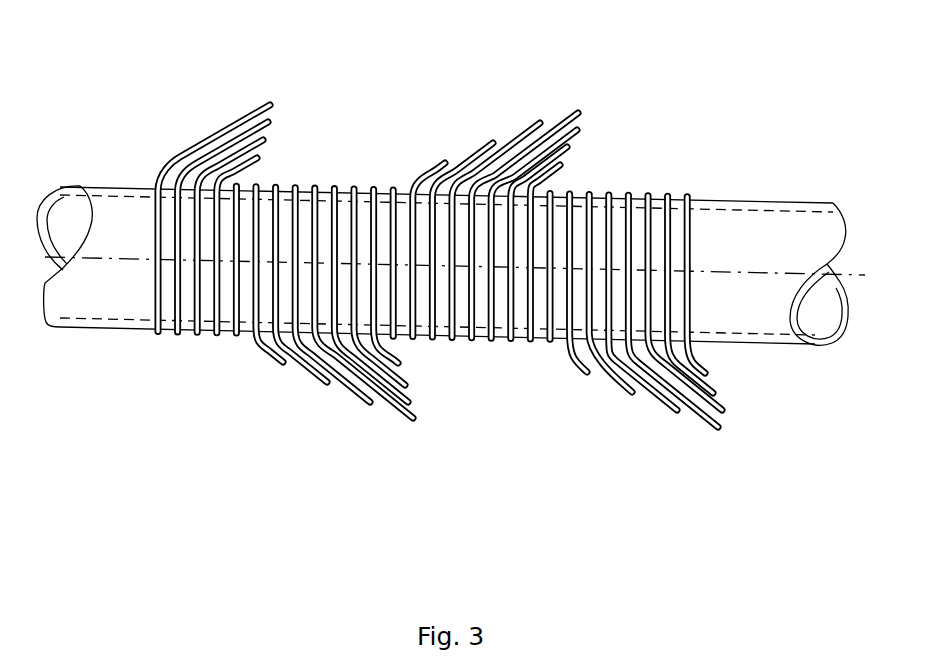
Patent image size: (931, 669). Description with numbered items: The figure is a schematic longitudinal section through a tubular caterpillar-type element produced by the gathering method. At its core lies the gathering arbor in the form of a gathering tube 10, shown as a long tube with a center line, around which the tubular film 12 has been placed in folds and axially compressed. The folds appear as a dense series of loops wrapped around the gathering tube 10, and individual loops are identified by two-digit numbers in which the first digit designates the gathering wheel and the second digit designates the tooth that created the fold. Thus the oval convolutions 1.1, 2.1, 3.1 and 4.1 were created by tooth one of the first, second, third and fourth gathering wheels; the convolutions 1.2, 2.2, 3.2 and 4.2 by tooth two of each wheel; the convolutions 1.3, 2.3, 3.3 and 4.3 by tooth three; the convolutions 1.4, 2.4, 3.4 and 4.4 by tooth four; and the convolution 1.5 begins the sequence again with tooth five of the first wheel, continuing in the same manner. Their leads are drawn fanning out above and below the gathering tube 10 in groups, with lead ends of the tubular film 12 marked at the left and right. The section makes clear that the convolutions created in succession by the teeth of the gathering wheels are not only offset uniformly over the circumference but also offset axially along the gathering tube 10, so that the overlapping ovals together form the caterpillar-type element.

The gathering tube 10 is at (737, 233).
The tubular film 12 is at (242, 140).
The oval convolution 1.1 is at (260, 105).
The oval convolution 2.1 is at (270, 121).
The oval convolution 3.1 is at (265, 140).
The oval convolution 4.1 is at (258, 159).
The oval convolution 1.2 is at (238, 337).
The oval convolution 2.2 is at (270, 363).
The oval convolution 3.2 is at (318, 382).
The oval convolution 4.2 is at (370, 400).
The oval convolution 1.3 is at (413, 418).
The oval convolution 2.3 is at (408, 403).
The oval convolution 3.3 is at (405, 385).
The oval convolution 4.3 is at (398, 365).
The oval convolution 1.4 is at (394, 186).
The oval convolution 2.4 is at (443, 158).
The oval convolution 3.4 is at (492, 140).
The oval convolution 4.4 is at (540, 122).
The oval convolution 1.5 is at (580, 117).